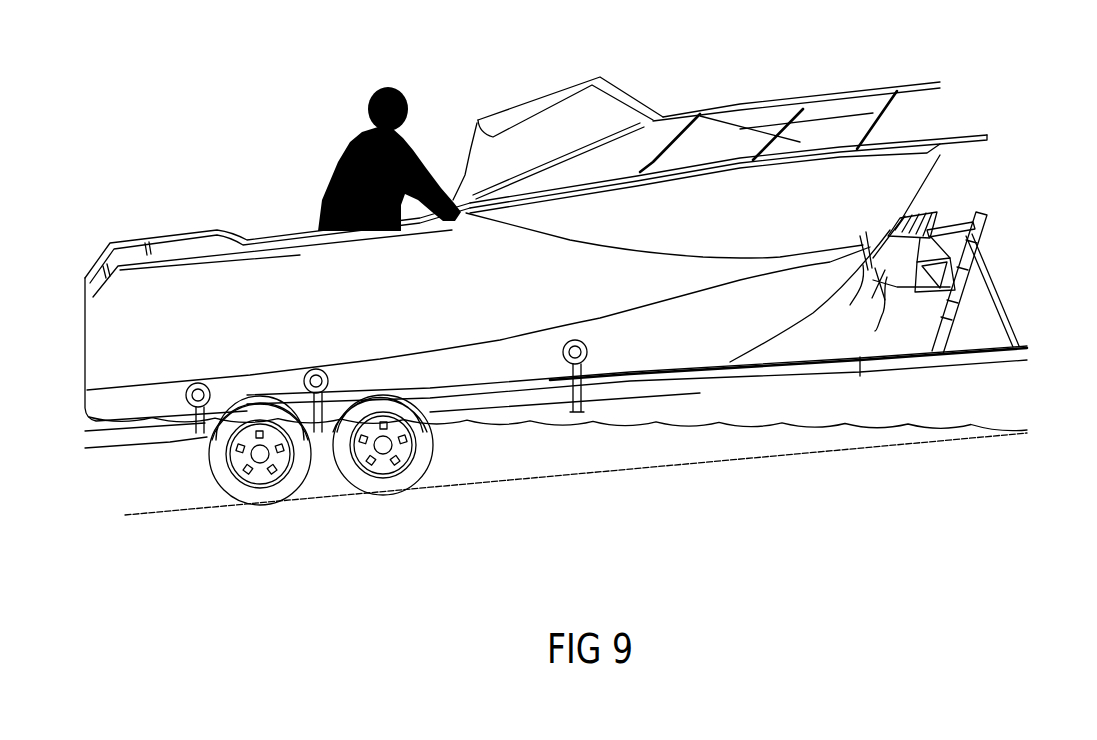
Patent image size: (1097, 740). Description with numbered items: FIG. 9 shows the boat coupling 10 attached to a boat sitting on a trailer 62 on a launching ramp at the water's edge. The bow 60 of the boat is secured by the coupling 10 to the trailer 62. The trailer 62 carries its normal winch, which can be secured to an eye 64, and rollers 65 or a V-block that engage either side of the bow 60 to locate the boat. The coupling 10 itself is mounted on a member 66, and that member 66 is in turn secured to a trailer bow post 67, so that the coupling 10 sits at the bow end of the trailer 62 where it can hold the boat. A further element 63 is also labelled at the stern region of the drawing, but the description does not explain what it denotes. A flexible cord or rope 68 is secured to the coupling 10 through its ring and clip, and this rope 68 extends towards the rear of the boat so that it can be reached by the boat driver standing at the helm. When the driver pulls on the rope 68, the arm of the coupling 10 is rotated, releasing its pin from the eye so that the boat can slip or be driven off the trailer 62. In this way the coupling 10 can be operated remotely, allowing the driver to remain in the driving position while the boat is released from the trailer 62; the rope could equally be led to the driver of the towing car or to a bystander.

The coupling 10 is at (893, 200).
The bow 60 is at (727, 333).
The trailer 62 is at (527, 398).
The boarding ladder 63 is at (950, 262).
The eye 64 is at (863, 285).
The rollers 65 is at (868, 262).
The member 66 is at (957, 230).
The trailer bow post 67 is at (875, 331).
The flexible cord or rope 68 is at (640, 253).